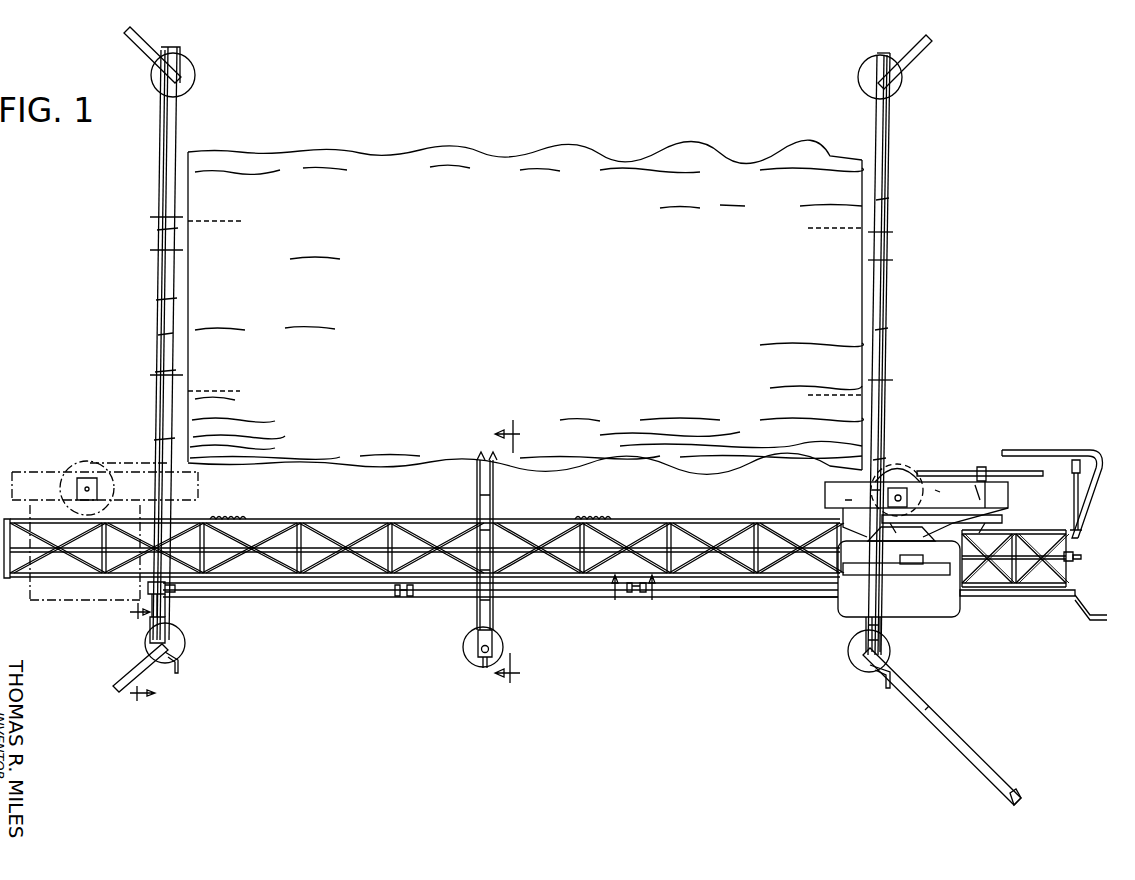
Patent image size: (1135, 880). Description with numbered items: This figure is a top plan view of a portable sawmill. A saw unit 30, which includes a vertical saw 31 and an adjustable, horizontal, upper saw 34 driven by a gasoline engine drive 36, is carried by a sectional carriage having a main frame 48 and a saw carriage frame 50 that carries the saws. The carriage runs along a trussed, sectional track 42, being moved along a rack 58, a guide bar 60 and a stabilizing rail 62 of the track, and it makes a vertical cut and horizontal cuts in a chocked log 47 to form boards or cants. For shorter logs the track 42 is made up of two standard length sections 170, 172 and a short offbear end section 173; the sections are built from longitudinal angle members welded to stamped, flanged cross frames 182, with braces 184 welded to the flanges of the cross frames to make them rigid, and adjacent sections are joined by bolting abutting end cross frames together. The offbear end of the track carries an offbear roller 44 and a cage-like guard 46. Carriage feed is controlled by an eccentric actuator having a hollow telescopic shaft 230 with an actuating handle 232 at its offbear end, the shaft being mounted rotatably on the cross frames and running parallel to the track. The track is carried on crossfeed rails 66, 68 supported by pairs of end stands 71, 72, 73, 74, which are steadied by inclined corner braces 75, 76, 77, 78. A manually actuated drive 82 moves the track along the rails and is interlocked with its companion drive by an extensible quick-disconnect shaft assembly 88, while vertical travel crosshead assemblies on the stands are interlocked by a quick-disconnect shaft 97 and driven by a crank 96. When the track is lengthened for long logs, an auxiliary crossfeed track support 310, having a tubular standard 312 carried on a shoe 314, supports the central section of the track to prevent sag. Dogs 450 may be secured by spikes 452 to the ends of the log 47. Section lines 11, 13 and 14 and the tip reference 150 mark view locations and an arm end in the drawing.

The log 47 is at (545, 152).
The crossfeed rail 66 is at (180, 121).
The crossfeed rail 68 is at (878, 142).
The end stand 72 is at (180, 78).
The end stand 73 is at (872, 82).
The inclined corner brace 76 is at (145, 50).
The inclined corner brace 77 is at (918, 56).
The dog 450 is at (160, 248).
The spike 452 is at (228, 390).
The quick-disconnect shaft 97 is at (160, 345).
The trussed sectional track 42 is at (424, 531).
The standard length track section 170 is at (284, 512).
The brace 184 is at (366, 526).
The cross frame 182 is at (400, 530).
The rack 58 is at (602, 519).
The guide bar 60 is at (452, 522).
The auxiliary crossfeed track support 310 is at (500, 630).
The shoe 314 is at (470, 645).
The tubular standard 312 is at (482, 652).
The section line 13 is at (517, 553).
The section line 14 is at (636, 598).
The extensible quick-disconnect shaft assembly 88 is at (283, 598).
The stabilizing rail 62 is at (345, 592).
The standard length track section 172 is at (736, 592).
The manually actuated drive 82 is at (140, 590).
The saw unit 30 is at (28, 615).
The section line 11 is at (134, 658).
The end stand 71 is at (178, 645).
The inclined corner brace 75 is at (125, 680).
The crank 96 is at (180, 668).
The gasoline engine drive 36 is at (830, 630).
The saw carriage frame 50 is at (848, 510).
The adjustable horizontal upper saw 34 is at (910, 470).
The vertical saw 31 is at (994, 470).
The cage-like guard 46 is at (1094, 450).
The offbear roller 44 is at (1084, 502).
The offbear end track section 173 is at (1074, 580).
The hollow telescopic shaft 230 is at (1075, 556).
The actuating handle 232 is at (1082, 558).
The main frame 48 is at (967, 600).
The end stand 74 is at (866, 656).
The inclined corner brace 78 is at (962, 738).
The arm tip 150 is at (1008, 798).